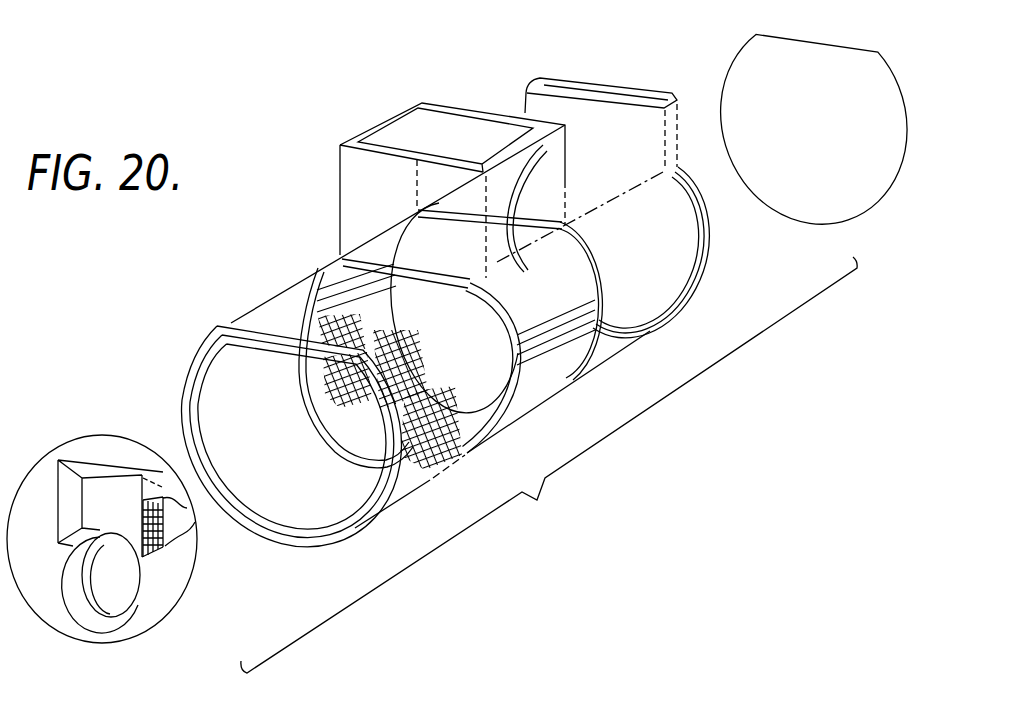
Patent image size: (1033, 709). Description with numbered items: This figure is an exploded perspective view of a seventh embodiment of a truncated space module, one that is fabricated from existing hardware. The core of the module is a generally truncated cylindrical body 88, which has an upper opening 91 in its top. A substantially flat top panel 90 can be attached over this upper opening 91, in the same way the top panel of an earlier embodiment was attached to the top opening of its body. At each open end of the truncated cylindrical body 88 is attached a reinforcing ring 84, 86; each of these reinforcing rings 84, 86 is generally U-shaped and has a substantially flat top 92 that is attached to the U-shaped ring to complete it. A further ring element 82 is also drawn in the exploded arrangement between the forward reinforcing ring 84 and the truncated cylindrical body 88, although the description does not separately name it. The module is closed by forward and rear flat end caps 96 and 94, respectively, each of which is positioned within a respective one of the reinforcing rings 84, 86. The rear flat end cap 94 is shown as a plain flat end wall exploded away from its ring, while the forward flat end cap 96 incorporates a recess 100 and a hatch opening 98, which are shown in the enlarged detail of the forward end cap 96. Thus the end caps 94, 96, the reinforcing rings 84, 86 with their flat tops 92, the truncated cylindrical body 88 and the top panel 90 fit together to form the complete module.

The screen cylinder 82 is at (322, 275).
The reinforcing ring 84 is at (195, 410).
The reinforcing ring 86 is at (512, 223).
The truncated cylindrical body 88 is at (543, 393).
The top panel 90 is at (443, 108).
The upper opening 91 is at (707, 254).
The flat top 92 is at (641, 88).
The rear flat end cap 94 is at (880, 77).
The forward flat end cap 96 is at (118, 522).
The hatch opening 98 is at (131, 584).
The recess 100 is at (112, 470).